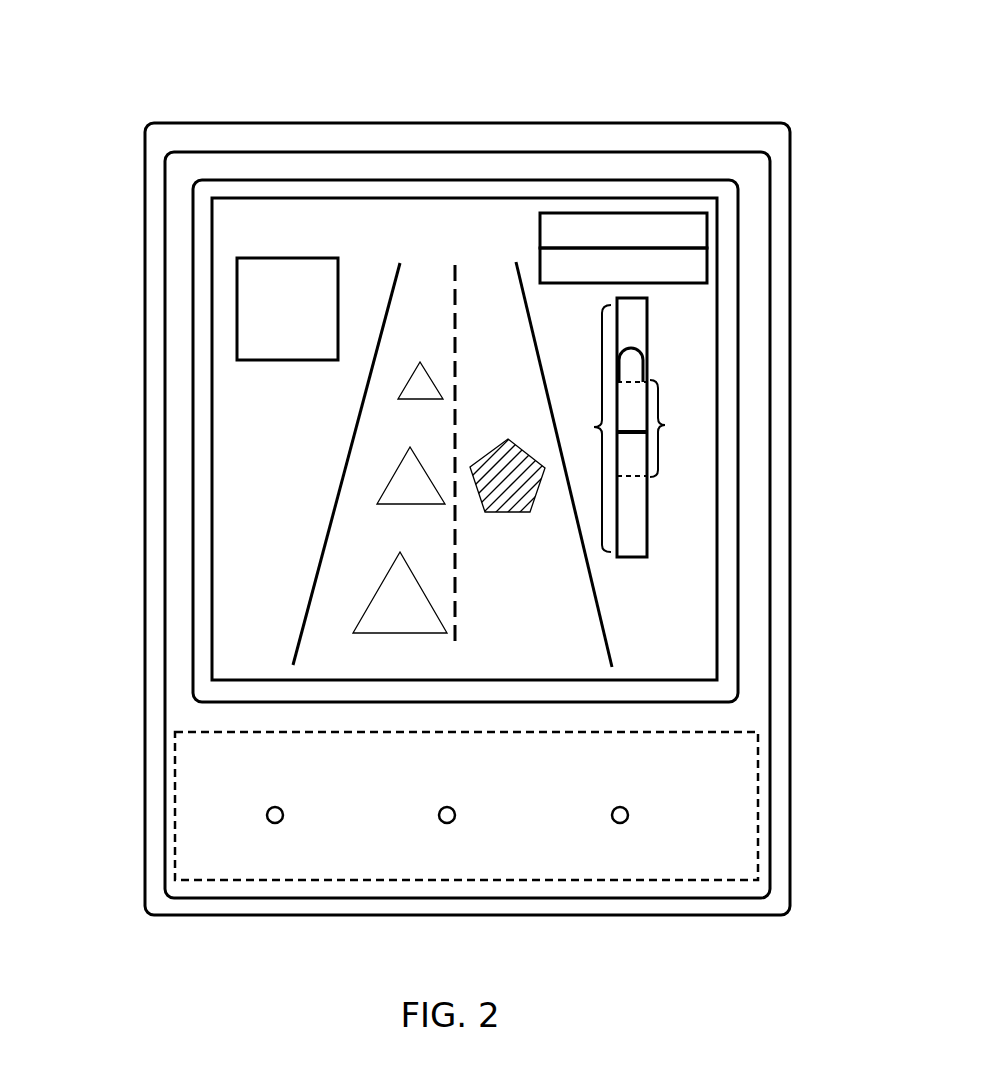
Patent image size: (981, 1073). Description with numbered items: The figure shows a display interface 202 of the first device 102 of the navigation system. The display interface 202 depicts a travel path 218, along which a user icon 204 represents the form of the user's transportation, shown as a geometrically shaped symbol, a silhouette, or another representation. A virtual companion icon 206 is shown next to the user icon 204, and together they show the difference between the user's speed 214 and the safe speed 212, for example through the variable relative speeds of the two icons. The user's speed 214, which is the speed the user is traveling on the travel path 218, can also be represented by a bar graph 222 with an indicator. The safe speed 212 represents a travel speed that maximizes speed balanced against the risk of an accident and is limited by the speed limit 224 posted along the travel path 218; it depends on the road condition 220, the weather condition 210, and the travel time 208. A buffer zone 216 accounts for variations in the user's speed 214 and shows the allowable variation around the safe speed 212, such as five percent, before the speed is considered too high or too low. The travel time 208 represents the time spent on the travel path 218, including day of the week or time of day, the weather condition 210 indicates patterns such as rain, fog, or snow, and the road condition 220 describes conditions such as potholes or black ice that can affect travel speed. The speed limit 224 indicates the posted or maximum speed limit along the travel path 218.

The first device 102 is at (210, 86).
The display interface 202 is at (515, 238).
The user icon 204 is at (507, 475).
The virtual companion icon 206 is at (398, 602).
The travel time 208 is at (633, 222).
The weather condition 210 is at (693, 262).
The safe speed 212 is at (630, 430).
The user's speed 214 is at (633, 346).
The buffer zone 216 is at (660, 427).
The travel path 218 is at (540, 617).
The road condition 220 is at (372, 207).
The bar graph 222 is at (600, 425).
The speed limit 224 is at (260, 273).